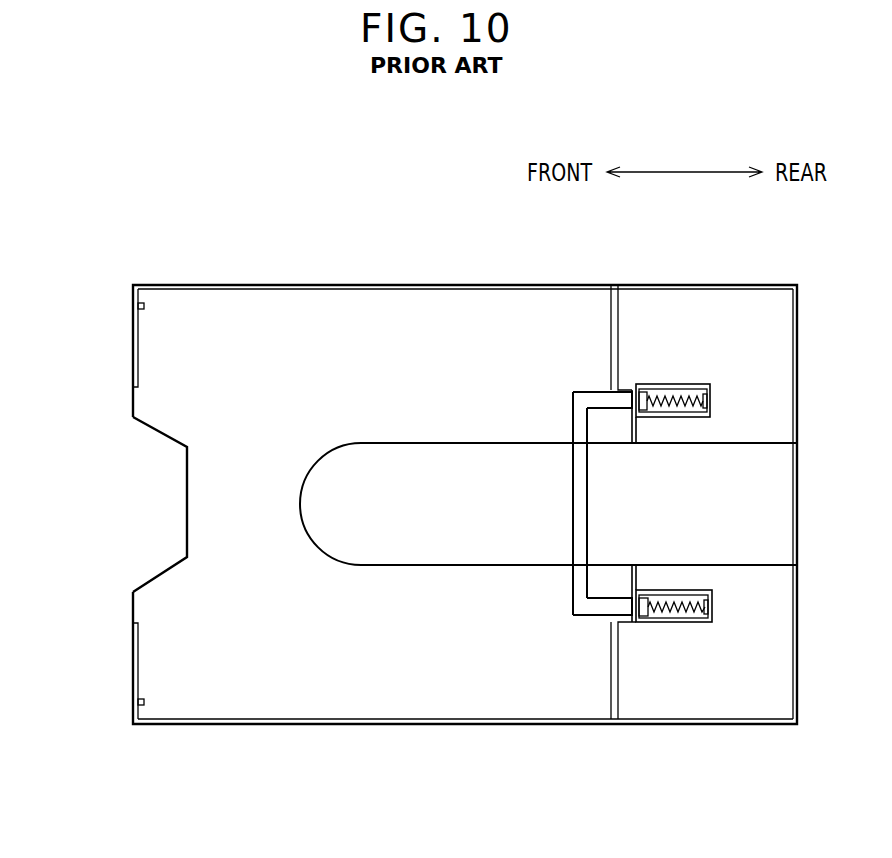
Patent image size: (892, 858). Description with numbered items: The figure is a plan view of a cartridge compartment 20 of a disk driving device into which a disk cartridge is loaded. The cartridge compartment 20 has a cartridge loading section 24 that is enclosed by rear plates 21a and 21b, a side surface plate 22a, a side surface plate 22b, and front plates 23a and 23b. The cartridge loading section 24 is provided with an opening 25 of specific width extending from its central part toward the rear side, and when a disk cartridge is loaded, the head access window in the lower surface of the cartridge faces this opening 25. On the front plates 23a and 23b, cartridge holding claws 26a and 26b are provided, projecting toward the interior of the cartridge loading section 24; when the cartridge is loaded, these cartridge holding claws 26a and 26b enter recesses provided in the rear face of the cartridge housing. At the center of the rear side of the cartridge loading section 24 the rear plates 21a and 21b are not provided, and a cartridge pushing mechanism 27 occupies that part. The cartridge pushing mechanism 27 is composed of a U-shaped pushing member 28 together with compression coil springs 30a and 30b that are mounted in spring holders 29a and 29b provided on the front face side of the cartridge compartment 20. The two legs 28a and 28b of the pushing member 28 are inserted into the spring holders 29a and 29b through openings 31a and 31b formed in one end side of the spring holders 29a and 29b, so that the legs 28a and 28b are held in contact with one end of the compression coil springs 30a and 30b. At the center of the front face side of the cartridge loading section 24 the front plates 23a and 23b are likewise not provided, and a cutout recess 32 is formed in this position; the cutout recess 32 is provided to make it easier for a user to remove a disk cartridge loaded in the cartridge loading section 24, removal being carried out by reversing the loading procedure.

The cartridge compartment 20 is at (452, 828).
The rear plate 21a is at (617, 305).
The rear plate 21b is at (620, 680).
The side surface plate 22a is at (493, 286).
The side surface plate 22b is at (300, 727).
The front plate 23a is at (133, 337).
The front plate 23b is at (134, 665).
The cartridge loading section 24 is at (258, 308).
The opening 25 is at (407, 445).
The cartridge holding claw 26a is at (141, 302).
The cartridge holding claw 26b is at (143, 707).
The cartridge pushing mechanism 27 is at (712, 507).
The pushing member 28 is at (583, 507).
The leg of pushing member 28a is at (598, 398).
The leg of pushing member 28b is at (582, 606).
The spring holder 29a is at (688, 392).
The spring holder 29b is at (687, 616).
The compression coil spring 30a is at (693, 404).
The compression coil spring 30b is at (688, 604).
The opening of spring holder 31a is at (633, 398).
The opening of spring holder 31b is at (628, 597).
The cutout recess 32 is at (146, 427).